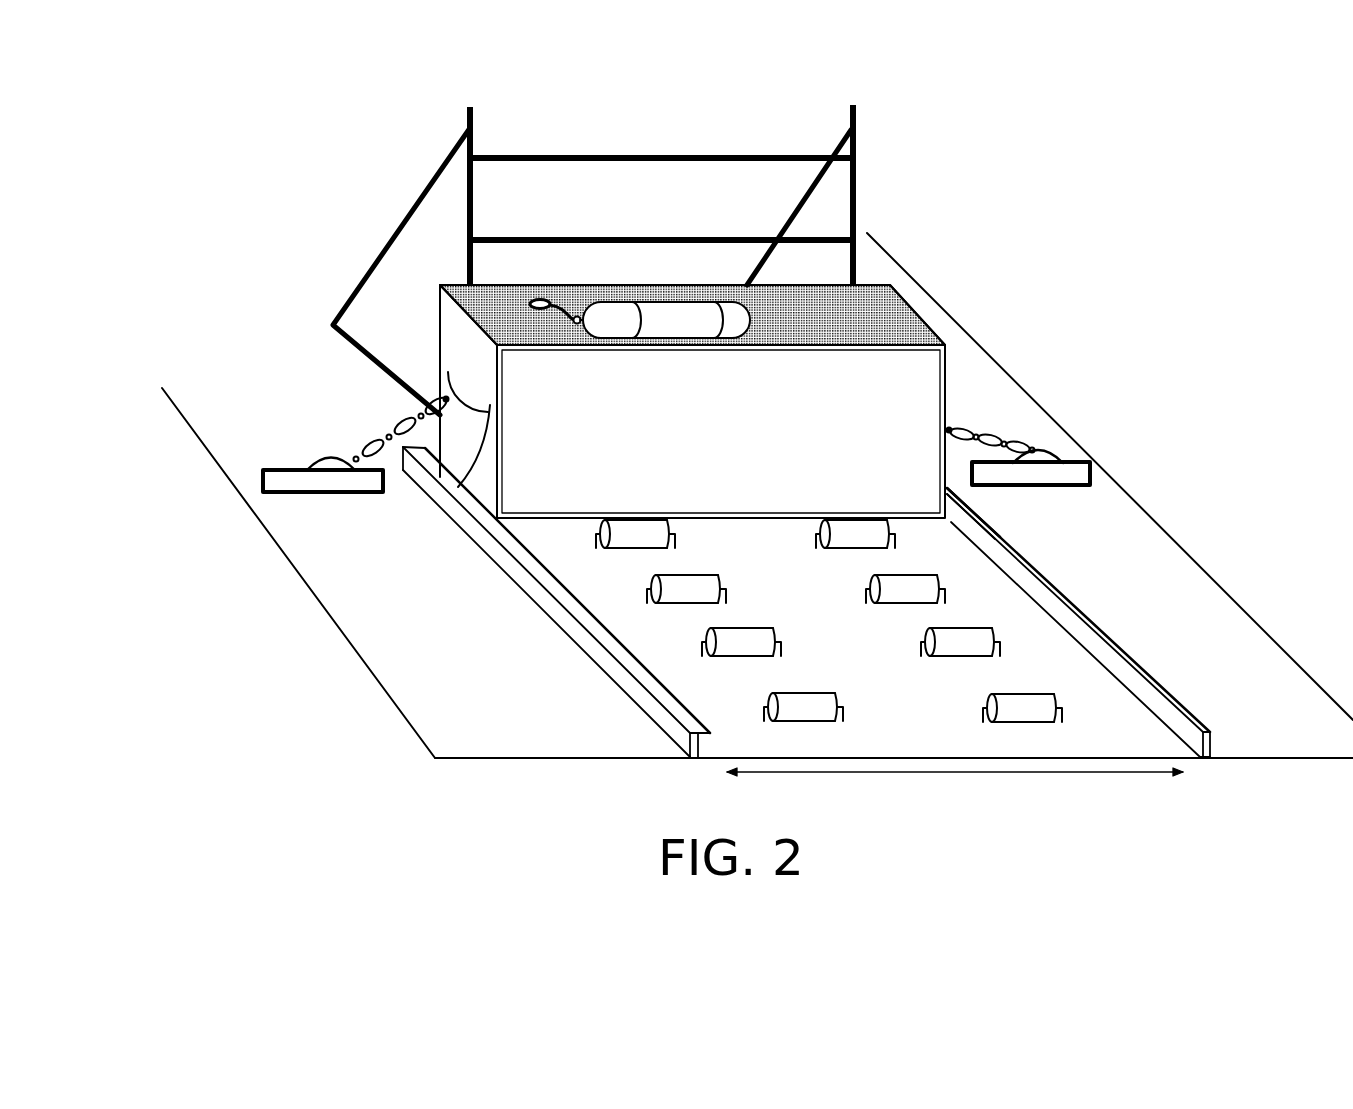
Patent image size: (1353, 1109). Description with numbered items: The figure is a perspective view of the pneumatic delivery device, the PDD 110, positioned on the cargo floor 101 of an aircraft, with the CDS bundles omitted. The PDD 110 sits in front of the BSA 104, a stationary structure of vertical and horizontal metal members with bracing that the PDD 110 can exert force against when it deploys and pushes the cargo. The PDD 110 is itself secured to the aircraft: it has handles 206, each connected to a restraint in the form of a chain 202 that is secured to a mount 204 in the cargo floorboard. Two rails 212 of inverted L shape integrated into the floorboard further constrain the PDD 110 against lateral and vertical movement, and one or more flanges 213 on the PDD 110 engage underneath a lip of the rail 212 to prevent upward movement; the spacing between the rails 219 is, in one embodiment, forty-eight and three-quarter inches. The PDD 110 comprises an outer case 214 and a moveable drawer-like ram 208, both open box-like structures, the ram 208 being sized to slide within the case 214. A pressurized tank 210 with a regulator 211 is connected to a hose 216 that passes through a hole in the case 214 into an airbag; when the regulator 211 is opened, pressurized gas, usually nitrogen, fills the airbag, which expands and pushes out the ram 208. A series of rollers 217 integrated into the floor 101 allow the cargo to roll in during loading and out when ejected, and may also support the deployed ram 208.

The cargo floor 101 is at (408, 635).
The BSA 104 is at (668, 108).
The PDD 110 is at (983, 255).
The chain 202 is at (410, 423).
The mount 204 is at (293, 478).
The handles 206 is at (458, 487).
The moveable ram 208 is at (877, 417).
The pressurized tank 210 is at (650, 312).
The regulator 211 is at (577, 316).
The rails 212 is at (562, 622).
The flanges 213 is at (950, 503).
The outer case 214 is at (920, 317).
The hose 216 is at (567, 302).
The rollers 217 is at (822, 665).
The spacing between the rails 219 is at (955, 786).